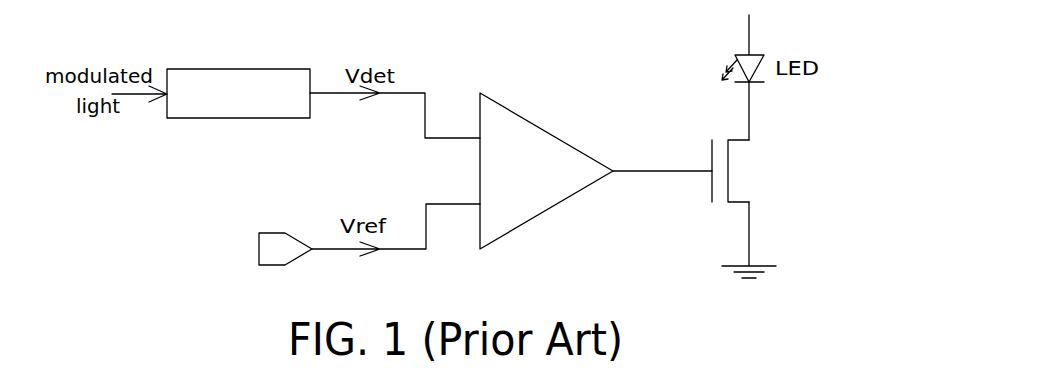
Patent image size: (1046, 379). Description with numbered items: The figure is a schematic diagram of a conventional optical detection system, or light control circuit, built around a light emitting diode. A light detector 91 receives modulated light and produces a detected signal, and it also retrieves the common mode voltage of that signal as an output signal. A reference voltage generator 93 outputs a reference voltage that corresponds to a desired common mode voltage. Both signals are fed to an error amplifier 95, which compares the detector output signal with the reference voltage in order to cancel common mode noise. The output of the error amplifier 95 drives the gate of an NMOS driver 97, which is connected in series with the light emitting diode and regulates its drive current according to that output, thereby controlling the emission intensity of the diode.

The light detector 91 is at (232, 69).
The reference voltage generator 93 is at (259, 250).
The error amplifier 95 is at (547, 128).
The NMOS driver 97 is at (719, 209).